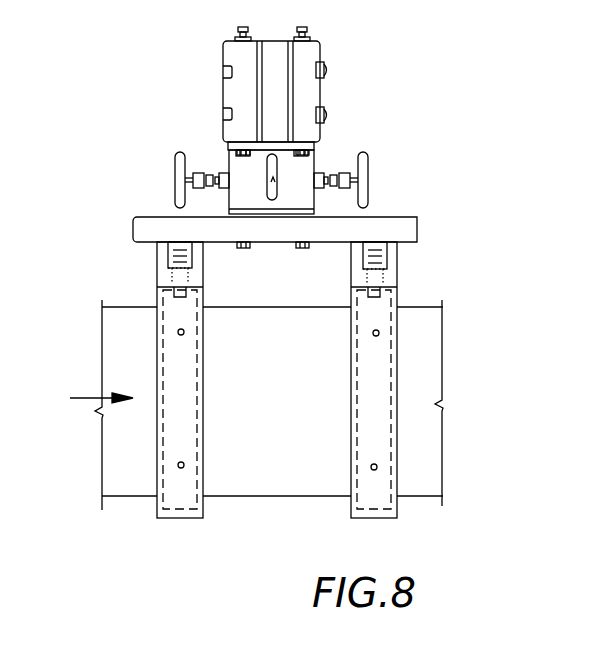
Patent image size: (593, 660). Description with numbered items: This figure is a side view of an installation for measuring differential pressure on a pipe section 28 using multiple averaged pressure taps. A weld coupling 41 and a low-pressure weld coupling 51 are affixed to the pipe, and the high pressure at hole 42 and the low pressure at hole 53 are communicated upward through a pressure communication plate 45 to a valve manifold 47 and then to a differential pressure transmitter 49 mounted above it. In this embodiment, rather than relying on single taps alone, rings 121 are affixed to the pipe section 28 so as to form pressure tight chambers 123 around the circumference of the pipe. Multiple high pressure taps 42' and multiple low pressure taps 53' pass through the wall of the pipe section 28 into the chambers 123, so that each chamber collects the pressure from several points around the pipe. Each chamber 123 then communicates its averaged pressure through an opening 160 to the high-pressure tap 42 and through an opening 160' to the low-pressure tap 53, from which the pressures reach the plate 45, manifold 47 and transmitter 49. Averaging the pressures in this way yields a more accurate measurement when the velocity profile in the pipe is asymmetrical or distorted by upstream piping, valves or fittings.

The differential pressure transmitter 49 is at (308, 52).
The valve manifold 47 is at (305, 155).
The pressure communication plate 45 is at (400, 228).
The weld coupling 41 is at (162, 262).
The low-pressure weld coupling 51 is at (400, 262).
The hole 42 is at (205, 275).
The hole 53 is at (348, 267).
The opening 160 is at (113, 290).
The opening 160' is at (439, 276).
The high pressure taps 42' is at (141, 432).
The low pressure taps 53' is at (432, 395).
The rings 121 is at (157, 365).
The pressure tight chambers 123 is at (178, 435).
The pipe section 28 is at (288, 480).